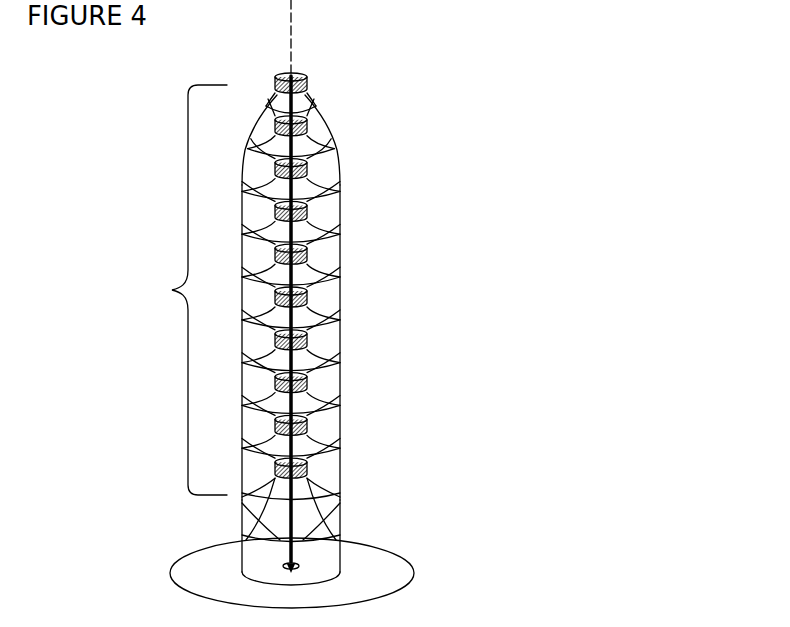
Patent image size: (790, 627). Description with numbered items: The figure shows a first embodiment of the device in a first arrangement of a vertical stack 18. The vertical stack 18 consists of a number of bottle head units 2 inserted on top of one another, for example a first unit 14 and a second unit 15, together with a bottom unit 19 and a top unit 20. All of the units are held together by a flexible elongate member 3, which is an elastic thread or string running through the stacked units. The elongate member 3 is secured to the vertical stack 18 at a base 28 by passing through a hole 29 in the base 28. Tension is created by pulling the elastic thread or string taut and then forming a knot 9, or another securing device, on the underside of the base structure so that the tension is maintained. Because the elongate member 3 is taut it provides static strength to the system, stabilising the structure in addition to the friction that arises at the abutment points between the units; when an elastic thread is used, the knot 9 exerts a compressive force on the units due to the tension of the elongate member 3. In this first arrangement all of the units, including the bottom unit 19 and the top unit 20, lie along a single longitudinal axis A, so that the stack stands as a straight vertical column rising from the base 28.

The longitudinal axis A is at (292, 42).
The bottle head units 2 is at (172, 290).
The flexible elongate member 3 is at (300, 106).
The first unit 14 is at (368, 288).
The second unit 15 is at (368, 256).
The vertical stack 18 is at (390, 187).
The bottom unit 19 is at (352, 552).
The top unit 20 is at (348, 120).
The base 28 is at (418, 560).
The hole 29 is at (320, 575).
The knot 9 is at (280, 583).